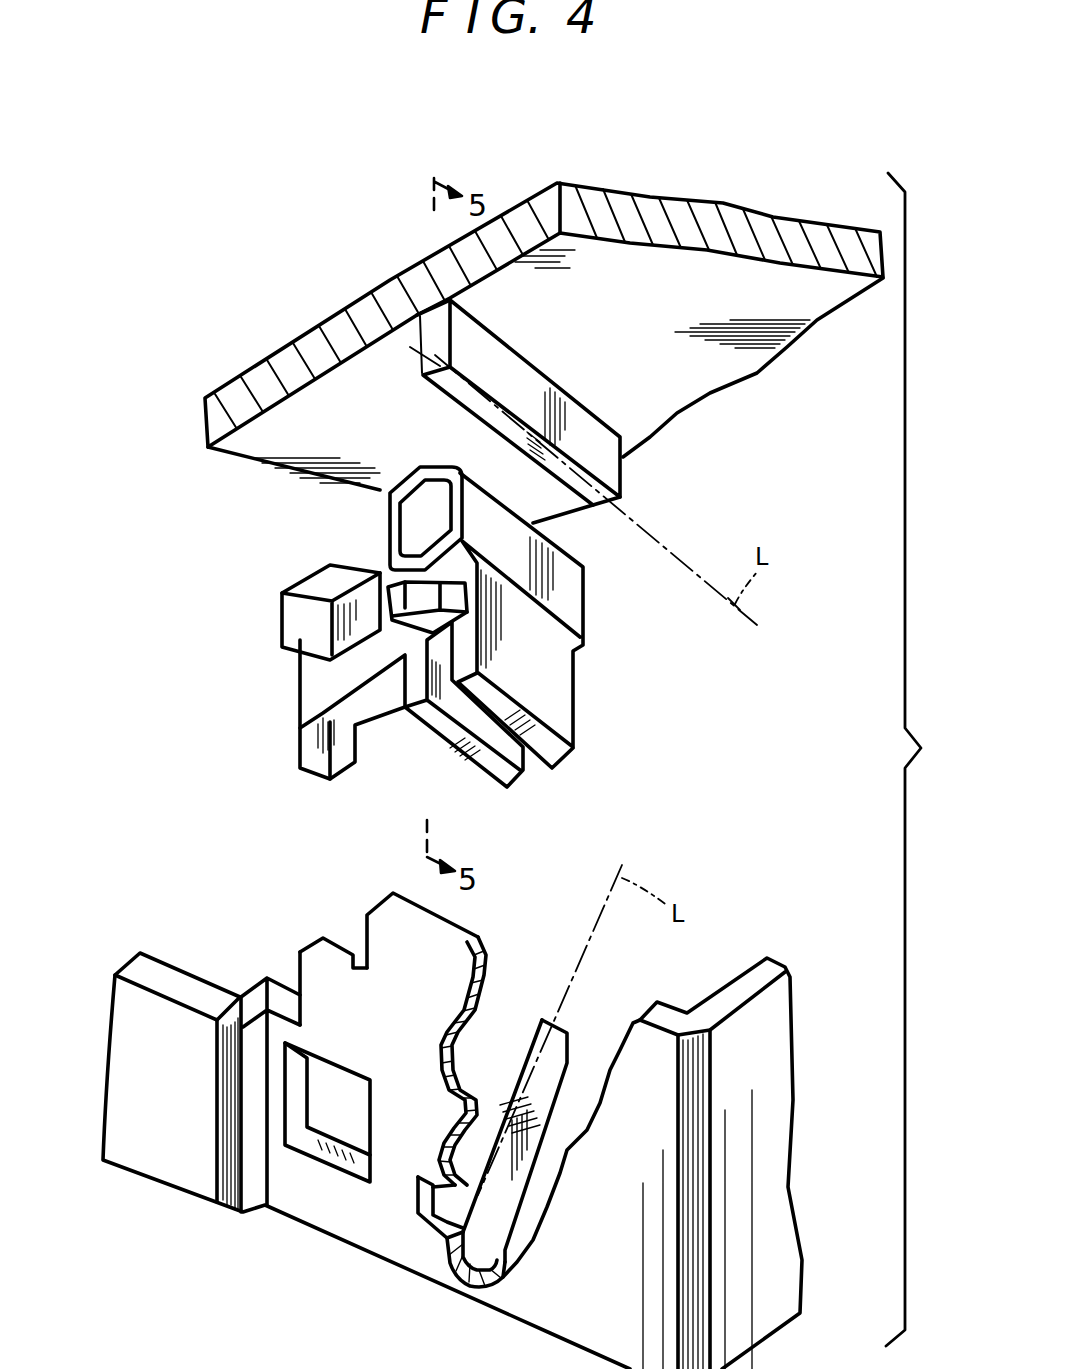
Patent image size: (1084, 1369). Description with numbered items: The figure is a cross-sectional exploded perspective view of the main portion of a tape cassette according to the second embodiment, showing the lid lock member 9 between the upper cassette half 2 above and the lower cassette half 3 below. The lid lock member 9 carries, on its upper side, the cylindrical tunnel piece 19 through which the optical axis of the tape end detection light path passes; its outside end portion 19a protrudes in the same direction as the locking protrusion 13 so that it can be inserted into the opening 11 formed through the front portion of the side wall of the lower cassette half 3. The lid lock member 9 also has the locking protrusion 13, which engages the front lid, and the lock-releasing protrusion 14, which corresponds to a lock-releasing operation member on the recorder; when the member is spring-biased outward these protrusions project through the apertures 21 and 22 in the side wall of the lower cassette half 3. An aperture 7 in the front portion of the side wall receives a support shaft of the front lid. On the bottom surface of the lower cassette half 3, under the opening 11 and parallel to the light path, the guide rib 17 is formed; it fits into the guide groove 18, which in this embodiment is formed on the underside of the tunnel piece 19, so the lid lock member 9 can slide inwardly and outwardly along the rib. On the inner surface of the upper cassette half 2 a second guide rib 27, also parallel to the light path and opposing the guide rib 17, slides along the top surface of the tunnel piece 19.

The upper cassette half 2 is at (683, 215).
The guide rib 27 is at (530, 388).
The lid lock member 9 is at (603, 693).
The tunnel piece 19 is at (583, 593).
The outside end portion 19a is at (425, 497).
The locking protrusion 13 is at (420, 600).
The guide groove 18 is at (475, 752).
The lock-releasing protrusion 14 is at (295, 600).
The lower cassette half 3 is at (178, 1178).
The apertures 7 is at (336, 953).
The opening 11 is at (468, 1053).
The aperture 22 is at (357, 1127).
The aperture 21 is at (420, 1203).
The guide rib 17 is at (540, 1038).